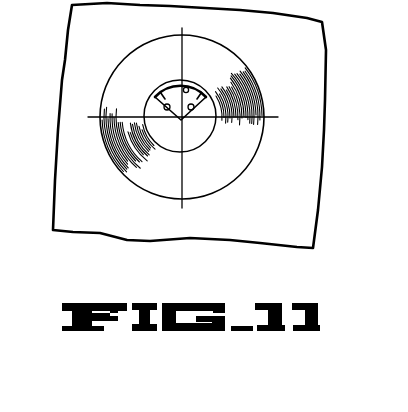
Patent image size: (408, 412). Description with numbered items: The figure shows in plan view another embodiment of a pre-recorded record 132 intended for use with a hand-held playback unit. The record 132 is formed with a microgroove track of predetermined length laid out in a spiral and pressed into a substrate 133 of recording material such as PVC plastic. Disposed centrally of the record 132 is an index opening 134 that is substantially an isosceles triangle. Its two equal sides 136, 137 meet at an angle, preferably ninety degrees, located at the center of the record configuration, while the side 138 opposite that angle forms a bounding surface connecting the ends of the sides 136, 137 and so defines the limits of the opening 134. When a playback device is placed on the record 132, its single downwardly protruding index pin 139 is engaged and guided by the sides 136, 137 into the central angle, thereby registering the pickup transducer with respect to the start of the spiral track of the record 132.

The pre-recorded record 132 is at (263, 80).
The substrate 133 is at (296, 221).
The index opening 134 is at (172, 93).
The side 136 is at (145, 111).
The side 137 is at (196, 96).
The side 138 is at (187, 88).
The index pin 139 is at (192, 110).